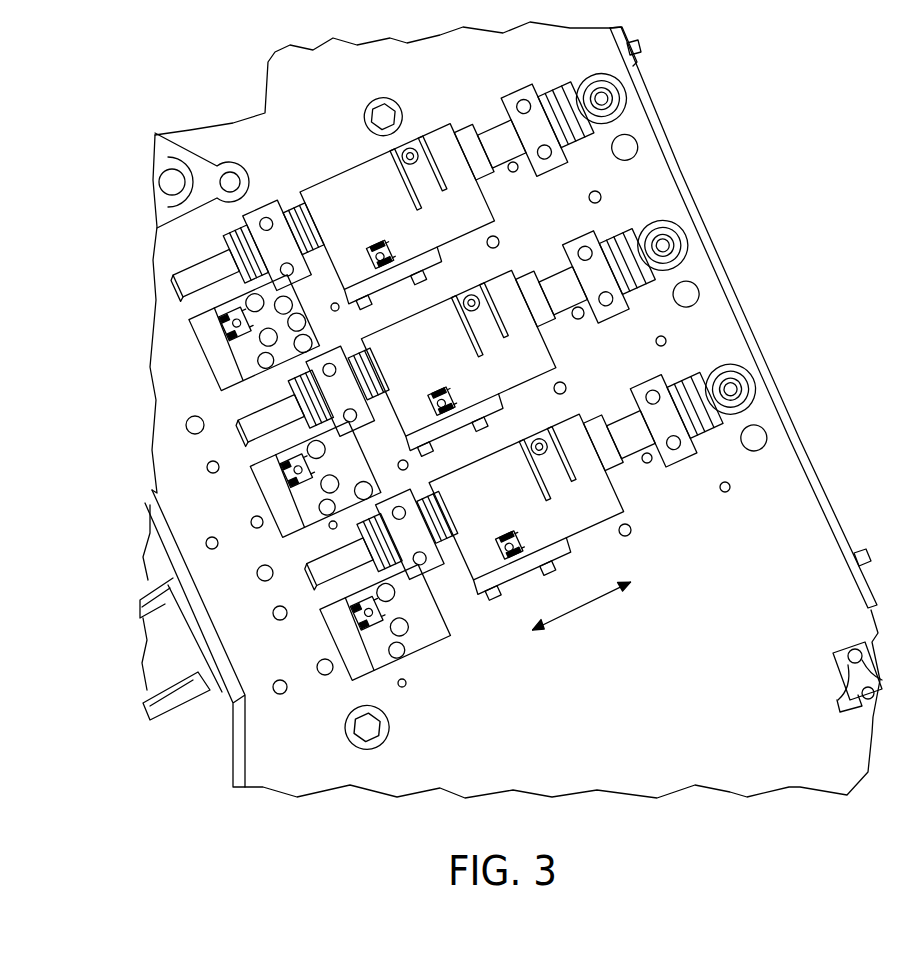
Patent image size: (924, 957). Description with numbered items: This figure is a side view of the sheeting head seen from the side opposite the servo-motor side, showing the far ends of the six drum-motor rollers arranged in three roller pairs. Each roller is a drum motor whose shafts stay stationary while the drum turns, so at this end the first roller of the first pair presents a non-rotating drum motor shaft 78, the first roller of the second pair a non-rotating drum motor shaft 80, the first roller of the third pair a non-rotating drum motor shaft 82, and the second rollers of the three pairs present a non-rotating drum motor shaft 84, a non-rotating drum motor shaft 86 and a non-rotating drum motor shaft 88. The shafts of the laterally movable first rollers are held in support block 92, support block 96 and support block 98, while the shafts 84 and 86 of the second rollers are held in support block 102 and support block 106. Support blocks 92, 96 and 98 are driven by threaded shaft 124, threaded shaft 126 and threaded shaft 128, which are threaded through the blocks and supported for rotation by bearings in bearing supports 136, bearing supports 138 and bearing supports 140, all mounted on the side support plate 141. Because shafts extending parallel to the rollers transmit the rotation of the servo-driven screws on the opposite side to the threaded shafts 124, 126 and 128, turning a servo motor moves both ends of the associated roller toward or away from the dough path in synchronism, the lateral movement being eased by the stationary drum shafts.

The non-rotating drum motor shaft 78 is at (372, 254).
The non-rotating drum motor shaft 80 is at (438, 402).
The non-rotating drum motor shaft 82 is at (498, 550).
The non-rotating drum motor shaft 84 is at (225, 322).
The non-rotating drum motor shaft 86 is at (290, 472).
The non-rotating drum motor shaft 88 is at (356, 614).
The support block 92 is at (434, 142).
The support block 96 is at (510, 370).
The support block 98 is at (573, 522).
The support block 102 is at (236, 352).
The support block 106 is at (306, 508).
The threaded shaft 124 is at (492, 142).
The threaded shaft 126 is at (560, 296).
The threaded shaft 128 is at (628, 438).
The bearing supports 136 is at (270, 216).
The bearing supports 138 is at (355, 416).
The bearing supports 140 is at (420, 562).
The side support plate 141 is at (800, 484).